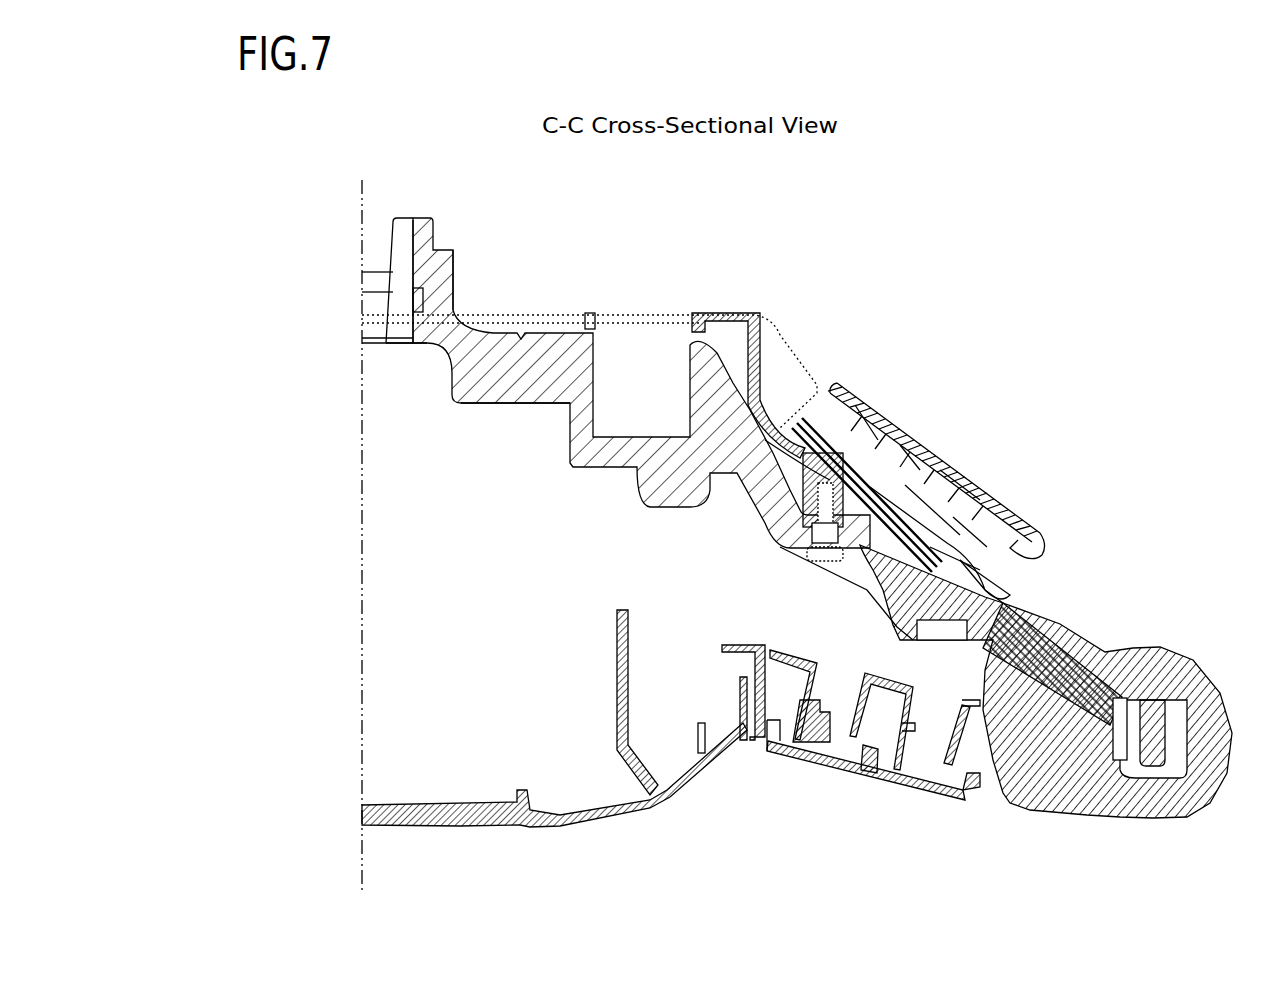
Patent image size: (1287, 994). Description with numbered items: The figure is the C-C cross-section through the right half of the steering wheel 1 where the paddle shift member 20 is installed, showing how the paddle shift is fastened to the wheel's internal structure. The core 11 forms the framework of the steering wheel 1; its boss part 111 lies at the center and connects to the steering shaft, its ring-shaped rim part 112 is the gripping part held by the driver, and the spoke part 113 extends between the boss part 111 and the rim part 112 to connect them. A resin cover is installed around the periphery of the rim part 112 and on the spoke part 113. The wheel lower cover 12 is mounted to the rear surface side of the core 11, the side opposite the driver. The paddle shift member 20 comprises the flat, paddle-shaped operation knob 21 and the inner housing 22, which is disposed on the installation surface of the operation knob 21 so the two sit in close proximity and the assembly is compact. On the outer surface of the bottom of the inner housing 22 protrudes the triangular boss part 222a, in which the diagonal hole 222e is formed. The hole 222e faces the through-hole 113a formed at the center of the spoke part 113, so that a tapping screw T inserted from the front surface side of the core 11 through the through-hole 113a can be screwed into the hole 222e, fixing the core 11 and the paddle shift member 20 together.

The steering wheel 1 is at (970, 257).
The core 11 is at (660, 518).
The wheel lower cover 12 is at (762, 330).
The paddle shift member 20 is at (908, 396).
The operation knob 21 is at (1025, 515).
The inner housing 22 is at (933, 590).
The boss part 111 is at (431, 345).
The rim part 112 is at (1160, 785).
The spoke part 113 is at (1045, 780).
The through-hole 113a is at (828, 540).
The boss part 222a is at (777, 432).
The hole 222e is at (836, 545).
The tapping screw T is at (805, 554).